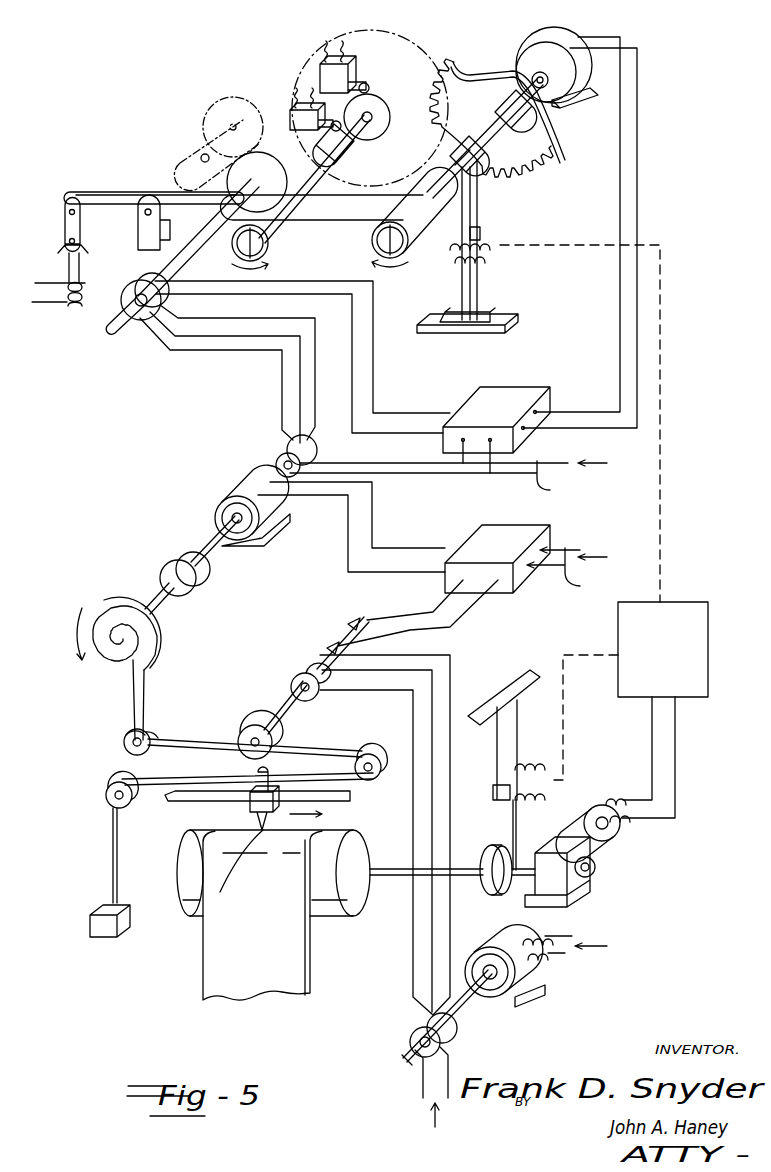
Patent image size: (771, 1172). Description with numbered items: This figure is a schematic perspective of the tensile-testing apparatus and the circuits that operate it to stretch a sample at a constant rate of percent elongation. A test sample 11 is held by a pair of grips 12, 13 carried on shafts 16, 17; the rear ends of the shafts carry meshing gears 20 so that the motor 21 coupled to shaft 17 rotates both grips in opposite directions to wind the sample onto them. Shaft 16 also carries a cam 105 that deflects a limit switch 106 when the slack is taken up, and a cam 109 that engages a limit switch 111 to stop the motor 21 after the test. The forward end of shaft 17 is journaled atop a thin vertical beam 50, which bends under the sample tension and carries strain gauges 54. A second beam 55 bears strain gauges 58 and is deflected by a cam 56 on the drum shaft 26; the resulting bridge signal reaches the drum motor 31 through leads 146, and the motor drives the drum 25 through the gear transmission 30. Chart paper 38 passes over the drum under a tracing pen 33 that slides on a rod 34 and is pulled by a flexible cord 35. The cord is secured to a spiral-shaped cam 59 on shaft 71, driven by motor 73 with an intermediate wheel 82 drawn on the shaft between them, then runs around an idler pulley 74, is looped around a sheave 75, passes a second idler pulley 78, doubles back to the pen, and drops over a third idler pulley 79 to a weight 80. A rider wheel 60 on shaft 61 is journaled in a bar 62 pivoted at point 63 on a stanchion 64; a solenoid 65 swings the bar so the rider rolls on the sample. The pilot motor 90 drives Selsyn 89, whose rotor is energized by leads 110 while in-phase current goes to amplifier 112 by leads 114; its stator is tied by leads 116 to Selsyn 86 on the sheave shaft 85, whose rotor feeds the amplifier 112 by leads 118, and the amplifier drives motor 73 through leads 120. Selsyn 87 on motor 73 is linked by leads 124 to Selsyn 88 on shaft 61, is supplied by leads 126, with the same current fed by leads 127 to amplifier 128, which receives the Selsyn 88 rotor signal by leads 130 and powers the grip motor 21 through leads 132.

The test sample 11 is at (337, 213).
The grip 12 is at (269, 258).
The grip 13 is at (370, 245).
The shaft 16 is at (330, 160).
The shaft 17 is at (500, 130).
The meshing gears 20 is at (458, 62).
The motor 21 is at (565, 40).
The cylindrical drum 25 is at (363, 840).
The shaft 26 is at (410, 876).
The gear transmission 30 is at (570, 895).
The motor 31 is at (600, 840).
The tracing pen 33 is at (258, 832).
The horizontal rod 34 is at (195, 800).
The flexible cord 35 is at (133, 712).
The chart paper 38 is at (296, 983).
The vertical steel beam 50 is at (472, 207).
The strain gauges 54 is at (512, 243).
The vertical beam 55 is at (497, 732).
The cam 56 is at (500, 895).
The strain gauges 58 is at (565, 793).
The spiral-shaped cam 59 is at (160, 640).
The rider wheel 60 is at (226, 128).
The horizontal shaft 61 is at (172, 283).
The bar 62 is at (197, 205).
The pivot point 63 is at (145, 193).
The stanchion 64 is at (138, 238).
The solenoid 65 is at (63, 278).
The horizontal shaft 71 is at (212, 550).
The motor 73 is at (240, 494).
The idler pulley 74 is at (124, 742).
The sheave 75 is at (258, 722).
The idler pulley 78 is at (362, 755).
The idler pulley 79 is at (106, 795).
The weight 80 is at (90, 932).
The wheel 82 is at (166, 572).
The shaft 85 is at (280, 705).
The Selsyn 86 is at (300, 674).
The Selsyn 87 is at (318, 452).
The Selsyn 88 is at (128, 288).
The Selsyn 89 is at (455, 1038).
The pilot motor 90 is at (528, 965).
The cam 105 is at (368, 168).
The limit switch 106 is at (292, 110).
The cam 109 is at (385, 120).
The leads 110 is at (423, 1085).
The limit switch 111 is at (320, 66).
The amplifier 112 is at (528, 535).
The leads 114 is at (576, 576).
The leads 116 is at (453, 962).
The leads 118 is at (400, 625).
The leads 120 is at (355, 520).
The leads 124 is at (325, 372).
The leads 126 is at (457, 477).
The leads 127 is at (490, 455).
The amplifier 128 is at (530, 392).
The leads 130 is at (314, 283).
The leads 132 is at (617, 343).
The leads 146 is at (650, 750).